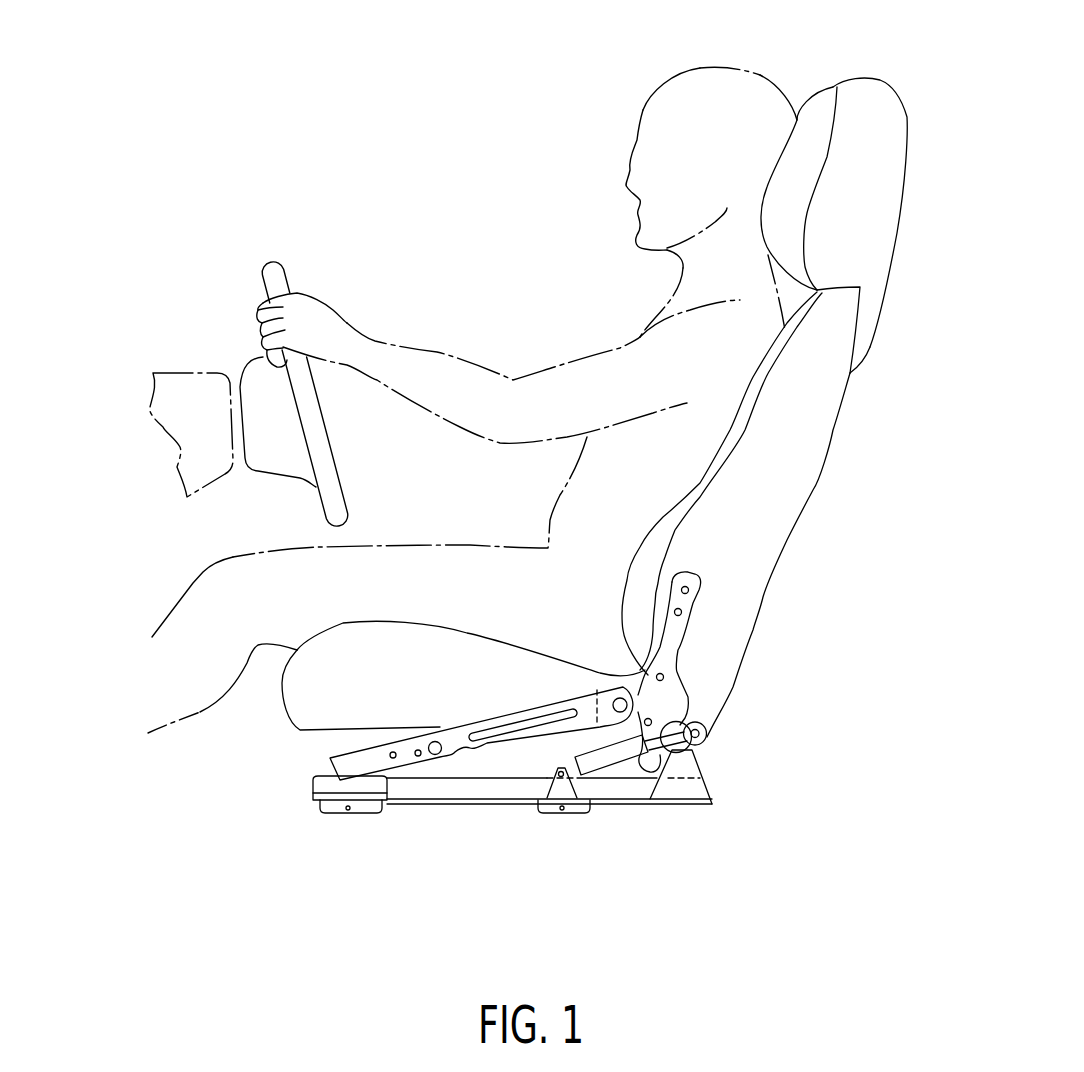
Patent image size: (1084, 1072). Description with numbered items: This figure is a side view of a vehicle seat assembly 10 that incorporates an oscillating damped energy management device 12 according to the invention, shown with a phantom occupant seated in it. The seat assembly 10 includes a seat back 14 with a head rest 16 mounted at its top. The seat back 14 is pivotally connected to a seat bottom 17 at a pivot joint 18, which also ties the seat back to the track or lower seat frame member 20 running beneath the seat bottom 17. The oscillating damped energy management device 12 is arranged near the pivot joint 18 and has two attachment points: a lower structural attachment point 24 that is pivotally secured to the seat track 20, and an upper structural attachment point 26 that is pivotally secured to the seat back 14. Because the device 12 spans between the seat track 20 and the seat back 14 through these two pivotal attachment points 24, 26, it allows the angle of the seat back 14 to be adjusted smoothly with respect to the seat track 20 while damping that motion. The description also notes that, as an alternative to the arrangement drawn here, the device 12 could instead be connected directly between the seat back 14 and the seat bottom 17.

The vehicle seat assembly 10 is at (777, 603).
The oscillating damped energy management device 12 is at (704, 763).
The seat back 14 is at (787, 480).
The head rest 16 is at (878, 153).
The seat bottom 17 is at (309, 732).
The pivot joint 18 is at (618, 703).
The seat track 20 is at (440, 787).
The lower structural attachment point 24 is at (547, 770).
The upper structural attachment point 26 is at (690, 590).